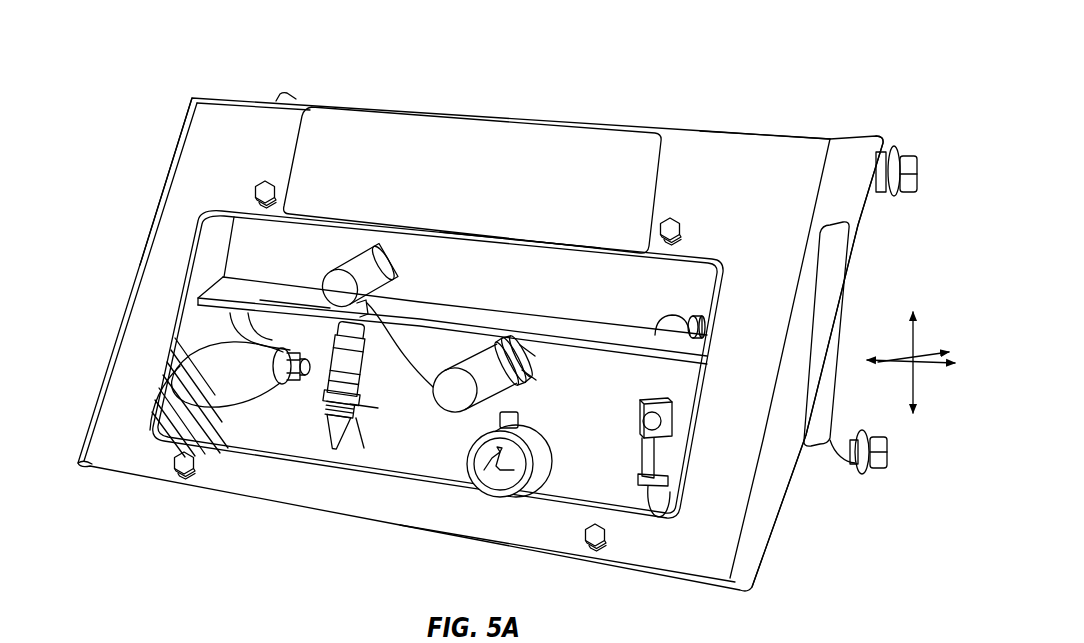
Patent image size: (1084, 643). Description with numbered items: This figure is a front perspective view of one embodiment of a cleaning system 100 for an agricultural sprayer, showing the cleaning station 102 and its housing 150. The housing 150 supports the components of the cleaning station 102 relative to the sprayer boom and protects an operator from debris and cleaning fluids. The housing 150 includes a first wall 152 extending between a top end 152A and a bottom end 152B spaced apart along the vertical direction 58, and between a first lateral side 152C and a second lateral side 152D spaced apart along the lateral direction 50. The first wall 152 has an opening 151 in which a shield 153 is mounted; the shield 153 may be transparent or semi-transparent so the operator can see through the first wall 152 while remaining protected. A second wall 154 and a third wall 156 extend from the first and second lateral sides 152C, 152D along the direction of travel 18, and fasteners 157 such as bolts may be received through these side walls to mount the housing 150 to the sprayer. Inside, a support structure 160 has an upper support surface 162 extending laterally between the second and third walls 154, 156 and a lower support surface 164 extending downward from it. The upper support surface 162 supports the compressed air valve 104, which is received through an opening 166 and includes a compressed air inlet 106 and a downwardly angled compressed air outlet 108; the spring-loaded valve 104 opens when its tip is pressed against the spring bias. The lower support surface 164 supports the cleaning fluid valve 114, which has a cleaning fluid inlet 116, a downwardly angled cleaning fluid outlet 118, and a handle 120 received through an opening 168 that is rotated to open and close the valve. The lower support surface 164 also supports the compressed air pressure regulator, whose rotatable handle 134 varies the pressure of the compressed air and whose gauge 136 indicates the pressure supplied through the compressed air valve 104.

The fluid delivery system 100 is at (83, 76).
The cleaning station 102 is at (453, 104).
The compressed air valve 104 is at (336, 421).
The compressed air inlet 106 is at (397, 291).
The compressed air outlet 108 is at (372, 452).
The cleaning fluid valve 114 is at (668, 318).
The cleaning fluid inlet 116 is at (695, 317).
The cleaning fluid outlet 118 is at (660, 512).
The handle 120 is at (652, 450).
The handle 134 is at (478, 367).
The gauge 136 is at (545, 462).
The housing 150 is at (374, 131).
The opening 151 is at (520, 240).
The first wall 152 is at (590, 150).
The top end 152A is at (748, 133).
The bottom end 152B is at (650, 583).
The first lateral side 152C is at (152, 209).
The second lateral side 152D is at (801, 283).
The shield 153 is at (588, 252).
The second wall 154 is at (283, 92).
The third wall 156 is at (860, 147).
The fasteners 157 is at (905, 158).
The support structure 160 is at (287, 290).
The upper support surface 162 is at (316, 292).
The lower support surface 164 is at (248, 313).
The opening 166 is at (400, 348).
The opening 168 is at (657, 415).
The direction of travel 18 is at (930, 354).
The lateral direction 50 is at (926, 366).
The vertical direction 58 is at (893, 359).